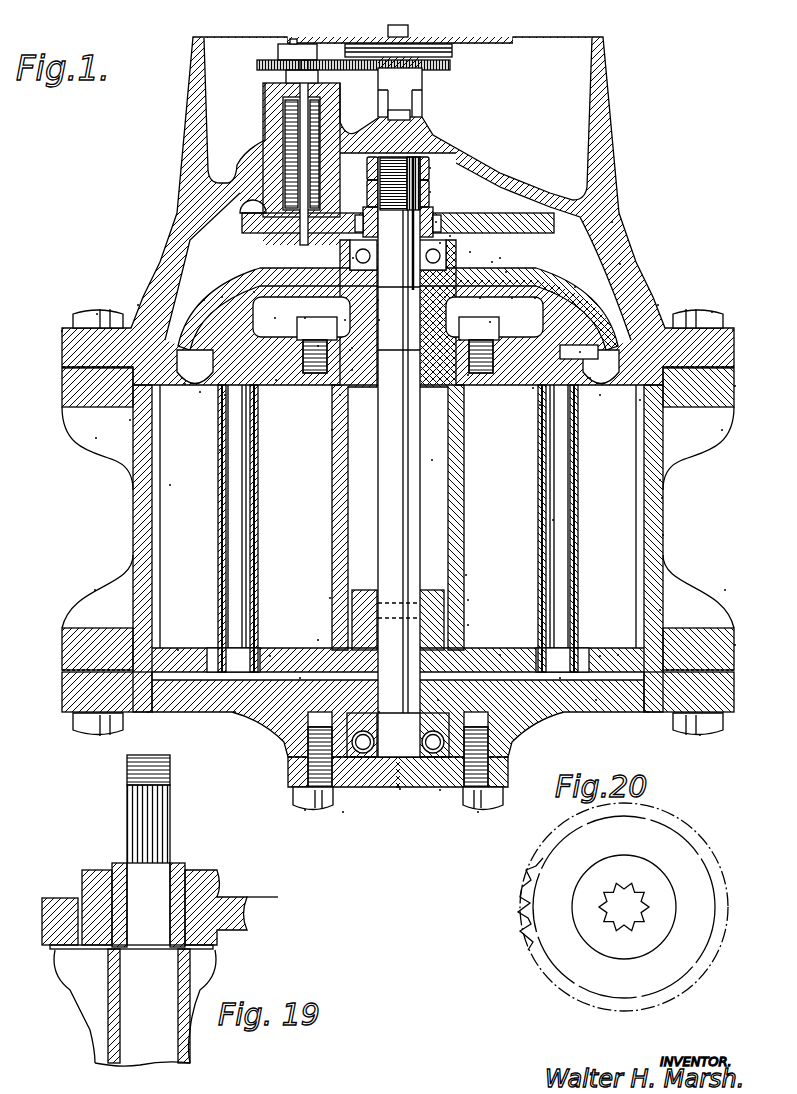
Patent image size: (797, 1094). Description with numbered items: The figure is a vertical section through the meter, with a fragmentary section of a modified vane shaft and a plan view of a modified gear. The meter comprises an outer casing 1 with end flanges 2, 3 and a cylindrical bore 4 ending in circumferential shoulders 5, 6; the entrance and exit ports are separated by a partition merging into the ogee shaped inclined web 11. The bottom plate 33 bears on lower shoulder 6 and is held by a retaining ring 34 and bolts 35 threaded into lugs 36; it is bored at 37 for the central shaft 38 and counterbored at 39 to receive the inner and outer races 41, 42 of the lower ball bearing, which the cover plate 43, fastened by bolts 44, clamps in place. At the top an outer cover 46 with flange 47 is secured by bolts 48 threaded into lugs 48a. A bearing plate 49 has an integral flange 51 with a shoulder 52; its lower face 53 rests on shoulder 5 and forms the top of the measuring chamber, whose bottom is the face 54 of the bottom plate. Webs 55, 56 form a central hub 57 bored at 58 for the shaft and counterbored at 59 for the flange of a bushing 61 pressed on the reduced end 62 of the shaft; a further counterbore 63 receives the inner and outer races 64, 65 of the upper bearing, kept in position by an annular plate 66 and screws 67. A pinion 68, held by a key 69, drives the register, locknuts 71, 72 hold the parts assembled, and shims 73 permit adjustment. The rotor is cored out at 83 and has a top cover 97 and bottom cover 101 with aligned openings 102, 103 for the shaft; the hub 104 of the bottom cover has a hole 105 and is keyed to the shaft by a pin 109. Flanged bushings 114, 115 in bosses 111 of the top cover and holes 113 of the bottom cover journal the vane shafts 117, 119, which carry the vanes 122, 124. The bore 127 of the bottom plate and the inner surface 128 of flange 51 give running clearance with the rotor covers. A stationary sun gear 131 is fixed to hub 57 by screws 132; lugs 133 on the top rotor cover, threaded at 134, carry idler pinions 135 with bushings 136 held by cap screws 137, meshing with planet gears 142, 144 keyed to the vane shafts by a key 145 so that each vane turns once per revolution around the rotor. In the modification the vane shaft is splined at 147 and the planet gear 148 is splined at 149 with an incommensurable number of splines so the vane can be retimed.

In FIG. 1, the outer casing 1 is at (662, 498).
In FIG. 1, the flange 2 is at (735, 386).
In FIG. 1, the flange 3 is at (735, 645).
In FIG. 1, the cylindrical bore 4 is at (663, 535).
In FIG. 1, the circumferential shoulder 5 is at (640, 400).
In FIG. 1, the circumferential shoulder 6 is at (660, 610).
In FIG. 1, the ogee shaped inclined web 11 is at (580, 352).
In FIG. 1, the bottom plate 33 is at (235, 712).
In FIG. 1, the retaining ring 34 is at (148, 712).
In FIG. 1, the bolts 35 is at (100, 735).
In FIG. 1, the lugs 36 is at (95, 590).
In FIG. 1, the bore 37 is at (438, 700).
In FIG. 1, the central shaft 38 is at (420, 505).
In FIG. 1, the counterbore 39 is at (379, 712).
In FIG. 1, the inner race 41 is at (400, 789).
In FIG. 1, the outer race 42 is at (343, 812).
In FIG. 1, the cover plate 43 is at (440, 790).
In FIG. 1, the bolts 44 is at (305, 810).
In FIG. 1, the outer cover 46 is at (612, 222).
In FIG. 1, the flange 47 is at (733, 330).
In FIG. 1, the bolts 48 is at (712, 312).
In FIG. 1, the lugs 48a is at (722, 430).
In FIG. 1, the bearing plate 49 is at (535, 298).
In FIG. 1, the flange 51 is at (200, 392).
In FIG. 1, the shoulder 52 is at (658, 305).
In FIG. 1, the lower face 53 is at (130, 420).
In FIG. 1, the face 54 is at (178, 650).
In FIG. 1, the web 55 is at (222, 297).
In FIG. 1, the web 56 is at (575, 287).
In FIG. 1, the central hub 57 is at (506, 272).
In FIG. 1, the bore 58 is at (379, 320).
In FIG. 1, the counterbore 59 is at (345, 320).
In FIG. 1, the bushing 61 is at (445, 297).
In FIG. 1, the reduced end 62 is at (436, 222).
In FIG. 1, the counterbore 63 is at (353, 258).
In FIG. 1, the inner race 64 is at (440, 243).
In FIG. 1, the outer race 65 is at (500, 258).
In FIG. 1, the annular plate 66 is at (492, 262).
In FIG. 1, the screws 67 is at (470, 252).
In FIG. 1, the pinion 68 is at (450, 236).
In FIG. 1, the key 69 is at (432, 218).
In FIG. 1, the locknut 71 is at (430, 192).
In FIG. 1, the locknut 72 is at (430, 168).
In FIG. 1, the shims 73 is at (378, 300).
In FIG. 1, the cored central portion 83 is at (432, 460).
In FIG. 1, the top rotor cover 97 is at (332, 430).
In FIG. 19, the top rotor cover 97 is at (233, 930).
In FIG. 1, the bottom rotor cover 101 is at (318, 640).
In FIG. 1, the opening 102 is at (340, 395).
In FIG. 1, the opening 103 is at (468, 625).
In FIG. 1, the hub 104 is at (466, 575).
In FIG. 1, the hole 105 is at (468, 600).
In FIG. 1, the pin 109 is at (330, 598).
In FIG. 1, the bosses 111 is at (185, 384).
In FIG. 1, the holes 113 is at (300, 678).
In FIG. 1, the flanged bushing 114 is at (225, 395).
In FIG. 1, the flanged bushing 115 is at (270, 656).
In FIG. 1, the vane shaft 117 is at (220, 450).
In FIG. 19, the vane shaft 117 is at (130, 990).
In FIG. 1, the vane shaft 119 is at (553, 520).
In FIG. 1, the vane 122 is at (170, 485).
In FIG. 19, the vane 122 is at (95, 1030).
In FIG. 1, the vane 124 is at (660, 480).
In FIG. 1, the cylindrical bore 127 is at (596, 700).
In FIG. 1, the inner surface 128 is at (590, 378).
In FIG. 1, the sun gear 131 is at (460, 340).
In FIG. 1, the screws 132 is at (480, 298).
In FIG. 1, the lugs 133 is at (275, 318).
In FIG. 1, the threaded bore 134 is at (352, 370).
In FIG. 1, the idler pinion 135 is at (352, 348).
In FIG. 1, the bushing 136 is at (305, 318).
In FIG. 1, the cap screw 137 is at (318, 346).
In FIG. 1, the planet gear 142 is at (204, 300).
In FIG. 1, the planet gear 144 is at (620, 264).
In FIG. 1, the key 145 is at (552, 292).
In FIG. 19, the splines 147 is at (140, 815).
In FIG. 20, the planet gear 148 is at (548, 917).
In FIG. 20, the splines 149 is at (635, 905).